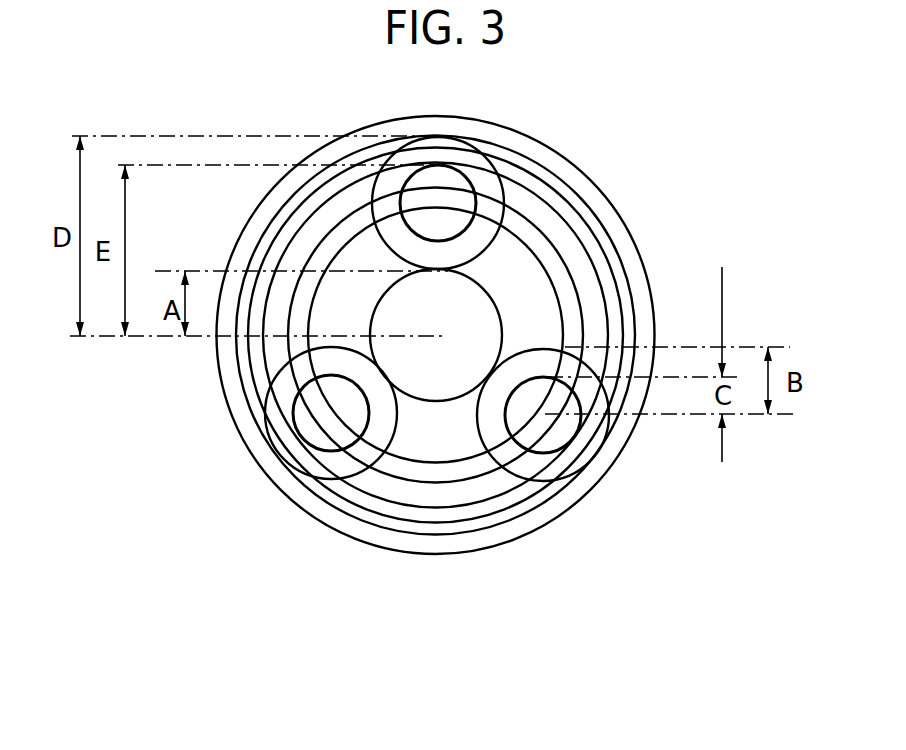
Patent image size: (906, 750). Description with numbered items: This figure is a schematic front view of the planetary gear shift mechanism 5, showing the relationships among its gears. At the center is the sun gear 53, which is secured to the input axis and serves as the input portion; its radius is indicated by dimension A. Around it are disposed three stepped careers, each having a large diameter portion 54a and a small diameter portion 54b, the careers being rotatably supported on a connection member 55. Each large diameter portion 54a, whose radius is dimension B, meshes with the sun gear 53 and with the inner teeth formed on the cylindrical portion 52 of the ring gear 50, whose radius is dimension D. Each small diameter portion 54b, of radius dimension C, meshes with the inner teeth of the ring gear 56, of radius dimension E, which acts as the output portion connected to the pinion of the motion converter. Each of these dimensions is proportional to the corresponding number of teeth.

The planetary gear shift mechanism 5 is at (636, 178).
The ring gear 50 is at (498, 558).
The cylindrical portion 52 is at (610, 452).
The sun gear 53 is at (437, 380).
The large diameter portion 54a is at (345, 465).
The small diameter portion 54b is at (317, 433).
The connection member 55 is at (505, 452).
The ring gear 56 is at (565, 460).